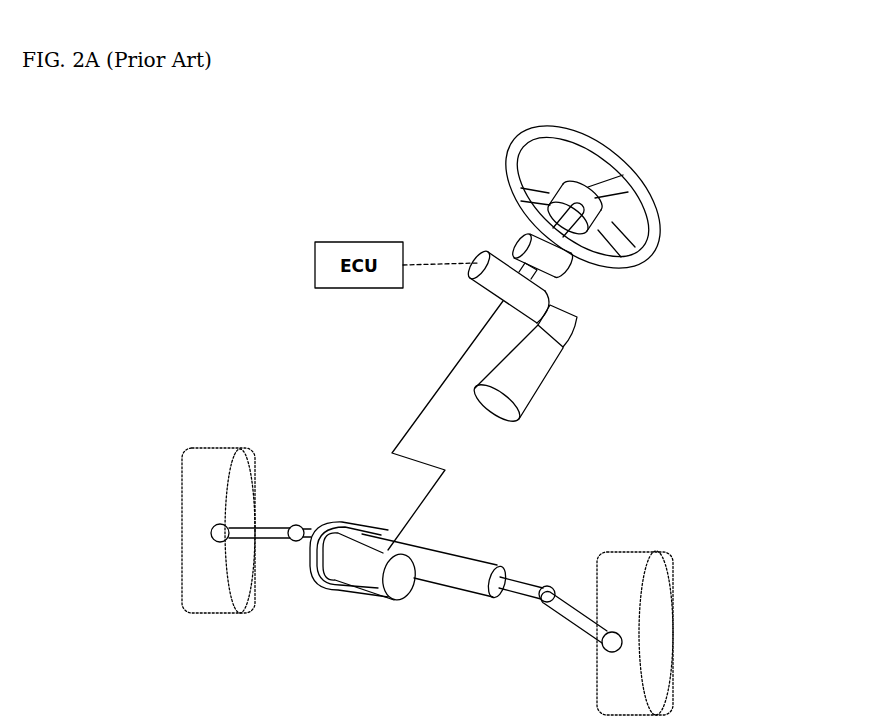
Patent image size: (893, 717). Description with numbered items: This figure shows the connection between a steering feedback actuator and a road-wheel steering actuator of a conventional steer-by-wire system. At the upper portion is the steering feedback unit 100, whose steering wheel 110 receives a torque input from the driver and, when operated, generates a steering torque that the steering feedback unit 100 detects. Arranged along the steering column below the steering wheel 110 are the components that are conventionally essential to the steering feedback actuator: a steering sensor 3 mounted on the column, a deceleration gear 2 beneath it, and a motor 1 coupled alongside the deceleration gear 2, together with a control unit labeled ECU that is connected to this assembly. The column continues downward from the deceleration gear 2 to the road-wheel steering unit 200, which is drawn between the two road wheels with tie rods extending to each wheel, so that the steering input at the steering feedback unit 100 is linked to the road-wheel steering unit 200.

The steering feedback unit 100 is at (627, 197).
The steering wheel 110 is at (655, 202).
The motor 1 is at (535, 375).
The deceleration gear 2 is at (478, 281).
The steering sensor 3 is at (518, 236).
The road-wheel steering unit 200 is at (333, 513).